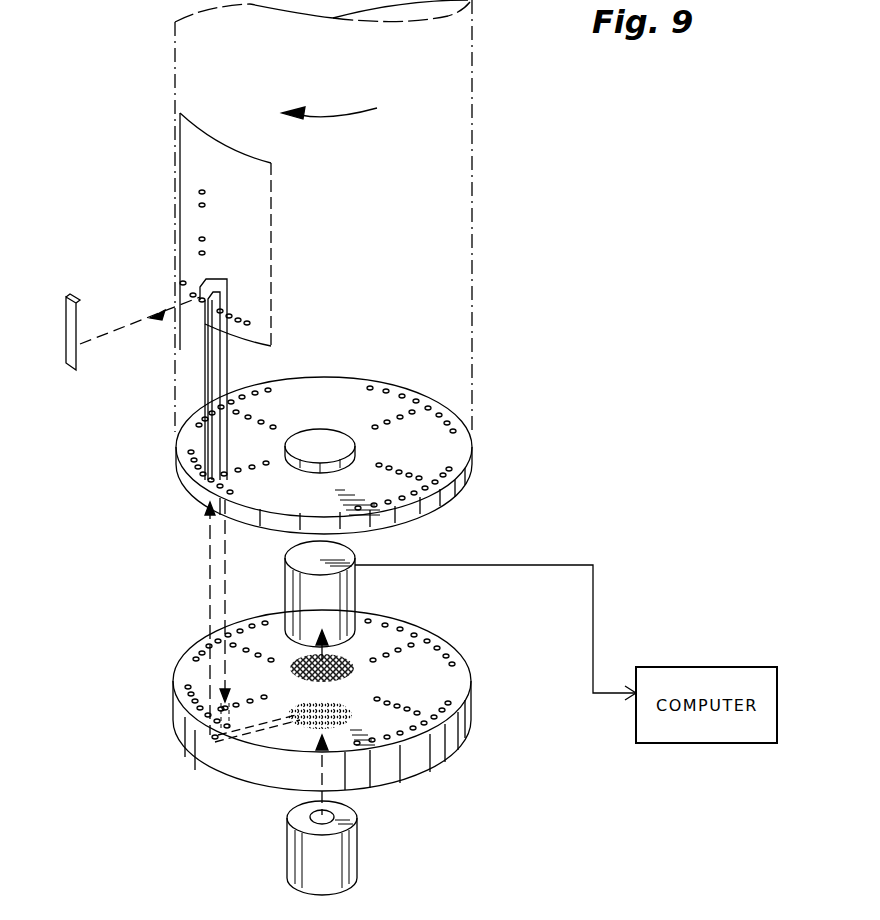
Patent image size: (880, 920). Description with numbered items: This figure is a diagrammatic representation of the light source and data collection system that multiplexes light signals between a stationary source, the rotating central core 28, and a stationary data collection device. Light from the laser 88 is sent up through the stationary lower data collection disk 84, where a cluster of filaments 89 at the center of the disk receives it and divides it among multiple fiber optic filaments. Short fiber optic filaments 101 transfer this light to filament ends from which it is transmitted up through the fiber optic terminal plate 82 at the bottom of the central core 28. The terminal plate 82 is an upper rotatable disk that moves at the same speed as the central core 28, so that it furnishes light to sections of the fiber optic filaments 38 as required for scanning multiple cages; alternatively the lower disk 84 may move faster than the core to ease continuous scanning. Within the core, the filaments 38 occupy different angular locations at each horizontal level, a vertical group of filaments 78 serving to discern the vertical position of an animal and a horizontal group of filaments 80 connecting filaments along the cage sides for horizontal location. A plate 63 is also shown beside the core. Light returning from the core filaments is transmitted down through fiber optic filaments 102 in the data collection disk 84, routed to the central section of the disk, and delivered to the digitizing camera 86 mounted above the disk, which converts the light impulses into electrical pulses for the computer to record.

The central core 28 is at (473, 85).
The vertical group of filaments 78 is at (198, 292).
The horizontal group of filaments 80 is at (250, 318).
The plate 63 is at (80, 298).
The fiber optic filaments 38 is at (207, 368).
The fiber optic terminal plate 82 is at (463, 487).
The digitizing camera 86 is at (348, 592).
The data collection disk 84 is at (455, 740).
The laser 88 is at (362, 850).
The cluster of filaments 89 is at (306, 727).
The short fiber optic filaments 101 is at (210, 738).
The fiber optic filaments 102 is at (184, 695).